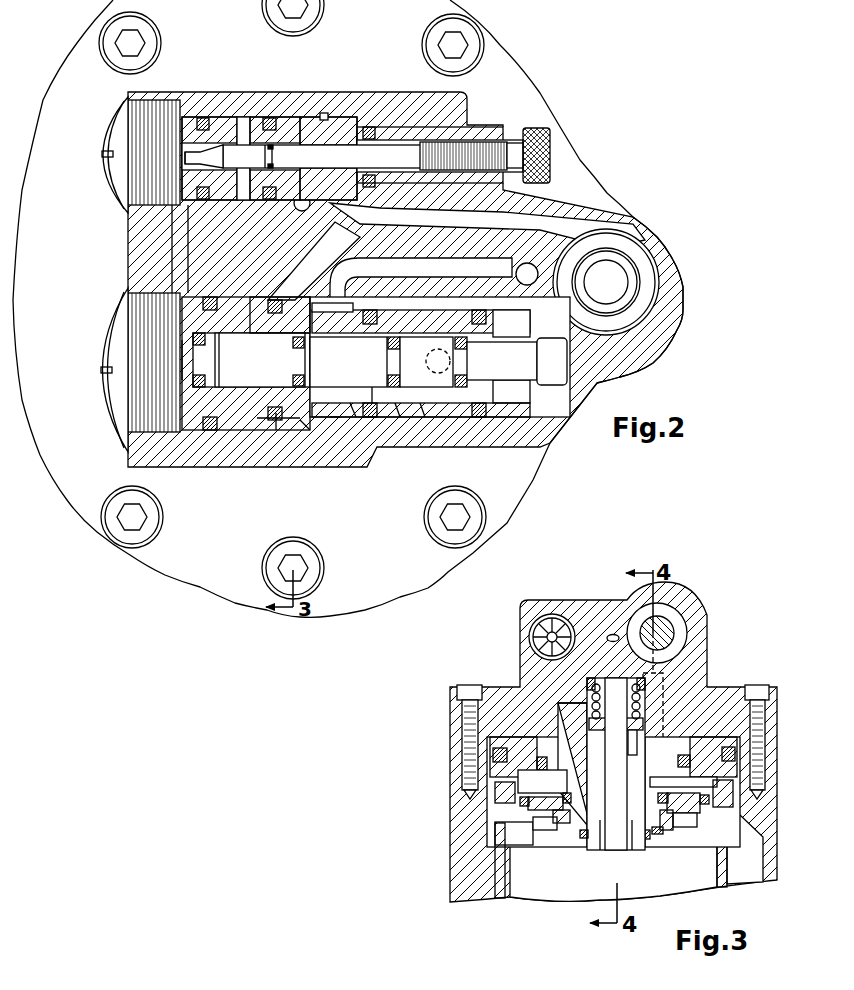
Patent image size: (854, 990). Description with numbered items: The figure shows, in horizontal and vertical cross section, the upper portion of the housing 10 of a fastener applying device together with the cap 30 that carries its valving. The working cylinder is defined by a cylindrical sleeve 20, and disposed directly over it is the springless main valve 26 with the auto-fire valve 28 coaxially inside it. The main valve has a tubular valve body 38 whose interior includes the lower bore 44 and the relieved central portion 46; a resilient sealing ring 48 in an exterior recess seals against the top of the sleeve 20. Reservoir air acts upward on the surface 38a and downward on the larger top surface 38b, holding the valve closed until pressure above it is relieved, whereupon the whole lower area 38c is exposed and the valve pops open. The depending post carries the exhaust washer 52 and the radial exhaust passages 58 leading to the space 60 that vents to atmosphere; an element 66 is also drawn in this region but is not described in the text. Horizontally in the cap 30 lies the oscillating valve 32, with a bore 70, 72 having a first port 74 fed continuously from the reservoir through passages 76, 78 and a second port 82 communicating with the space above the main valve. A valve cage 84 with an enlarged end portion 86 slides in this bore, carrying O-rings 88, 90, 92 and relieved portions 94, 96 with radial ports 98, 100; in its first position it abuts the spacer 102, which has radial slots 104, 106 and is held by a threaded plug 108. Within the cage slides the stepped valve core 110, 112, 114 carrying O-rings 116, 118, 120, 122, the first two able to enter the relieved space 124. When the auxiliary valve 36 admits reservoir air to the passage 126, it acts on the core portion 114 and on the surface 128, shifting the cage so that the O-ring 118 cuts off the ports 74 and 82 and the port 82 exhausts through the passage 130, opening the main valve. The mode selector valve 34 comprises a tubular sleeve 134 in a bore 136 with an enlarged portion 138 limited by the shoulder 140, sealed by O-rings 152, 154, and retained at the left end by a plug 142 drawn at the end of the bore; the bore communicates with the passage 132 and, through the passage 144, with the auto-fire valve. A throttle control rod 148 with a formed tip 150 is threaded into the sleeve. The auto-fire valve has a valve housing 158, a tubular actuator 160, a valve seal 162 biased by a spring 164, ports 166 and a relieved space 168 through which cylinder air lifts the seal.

In FIG. 3, the housing 10 is at (584, 742).
In FIG. 3, the cylindrical sleeve 20 is at (498, 893).
In FIG. 3, the springless main valve 26 is at (488, 772).
In FIG. 3, the auto-fire valve 28 is at (690, 700).
In FIG. 2, the cap 30 is at (135, 252).
In FIG. 3, the cap 30 is at (565, 600).
In FIG. 2, the oscillating valve 32 is at (178, 364).
In FIG. 2, the mode selector valve 34 is at (178, 155).
In FIG. 2, the auxiliary valve 36 is at (660, 290).
In FIG. 3, the valve body 38 is at (518, 740).
In FIG. 3, the surface 38a is at (500, 795).
In FIG. 3, the top surface 38b is at (510, 737).
In FIG. 3, the area 38c is at (500, 830).
In FIG. 3, the bore 44 is at (520, 832).
In FIG. 3, the relieved central portion 46 is at (556, 775).
In FIG. 3, the resilient sealing ring 48 is at (733, 815).
In FIG. 3, the exhaust washer 52 is at (560, 824).
In FIG. 3, the radial exhaust passages 58 is at (685, 814).
In FIG. 3, the space 60 is at (658, 835).
In FIG. 3, the packing ring 66 is at (545, 803).
In FIG. 2, the bore 70 is at (421, 408).
In FIG. 2, the bore 72 is at (336, 420).
In FIG. 2, the first port 74 is at (335, 303).
In FIG. 2, the passage 76 is at (438, 282).
In FIG. 3, the passage 76 is at (613, 634).
In FIG. 2, the passage 78 is at (516, 274).
In FIG. 2, the second port 82 is at (437, 358).
In FIG. 3, the second port 82 is at (690, 668).
In FIG. 2, the valve cage 84 is at (468, 410).
In FIG. 2, the enlarged end portion 86 is at (302, 422).
In FIG. 2, the O-ring 88 is at (490, 403).
In FIG. 2, the O-ring 90 is at (352, 410).
In FIG. 2, the O-ring 92 is at (278, 415).
In FIG. 2, the relieved portion 94 is at (372, 402).
In FIG. 2, the relieved portion 96 is at (446, 410).
In FIG. 2, the radial port 98 is at (328, 400).
In FIG. 2, the radial port 100 is at (396, 410).
In FIG. 2, the spacer 102 is at (208, 430).
In FIG. 2, the radial slots 104 is at (250, 420).
In FIG. 2, the radial slots 106 is at (190, 428).
In FIG. 2, the threaded plug 108 is at (107, 328).
In FIG. 2, the valve core 110 is at (480, 363).
In FIG. 2, the valve core 112 is at (282, 355).
In FIG. 2, the valve core 114 is at (205, 365).
In FIG. 2, the O-ring 116 is at (458, 340).
In FIG. 2, the O-ring 118 is at (380, 335).
In FIG. 2, the O-ring 120 is at (272, 298).
In FIG. 2, the O-ring 122 is at (205, 340).
In FIG. 2, the relieved space 124 is at (418, 350).
In FIG. 2, the passage 126 is at (318, 270).
In FIG. 2, the surface 128 is at (258, 420).
In FIG. 2, the passage 130 is at (563, 400).
In FIG. 2, the passage 132 is at (180, 228).
In FIG. 2, the tubular sleeve 134 is at (313, 128).
In FIG. 2, the bore 136 is at (325, 113).
In FIG. 2, the enlarged portion 138 is at (268, 118).
In FIG. 2, the shoulder 140 is at (337, 123).
In FIG. 2, the knurled cap 142 is at (138, 112).
In FIG. 2, the passage 144 is at (308, 207).
In FIG. 3, the passage 144 is at (594, 705).
In FIG. 2, the throttle control rod 148 is at (552, 134).
In FIG. 2, the formed tip 150 is at (213, 150).
In FIG. 2, the O-ring 152 is at (271, 117).
In FIG. 2, the O-ring 154 is at (372, 128).
In FIG. 3, the valve housing 158 is at (644, 840).
In FIG. 3, the tubular actuator 160 is at (618, 848).
In FIG. 3, the valve seal 162 is at (590, 726).
In FIG. 3, the spring 164 is at (633, 686).
In FIG. 3, the ports 166 is at (634, 745).
In FIG. 3, the relieved space 168 is at (585, 838).